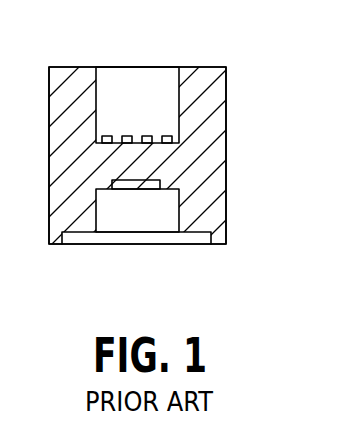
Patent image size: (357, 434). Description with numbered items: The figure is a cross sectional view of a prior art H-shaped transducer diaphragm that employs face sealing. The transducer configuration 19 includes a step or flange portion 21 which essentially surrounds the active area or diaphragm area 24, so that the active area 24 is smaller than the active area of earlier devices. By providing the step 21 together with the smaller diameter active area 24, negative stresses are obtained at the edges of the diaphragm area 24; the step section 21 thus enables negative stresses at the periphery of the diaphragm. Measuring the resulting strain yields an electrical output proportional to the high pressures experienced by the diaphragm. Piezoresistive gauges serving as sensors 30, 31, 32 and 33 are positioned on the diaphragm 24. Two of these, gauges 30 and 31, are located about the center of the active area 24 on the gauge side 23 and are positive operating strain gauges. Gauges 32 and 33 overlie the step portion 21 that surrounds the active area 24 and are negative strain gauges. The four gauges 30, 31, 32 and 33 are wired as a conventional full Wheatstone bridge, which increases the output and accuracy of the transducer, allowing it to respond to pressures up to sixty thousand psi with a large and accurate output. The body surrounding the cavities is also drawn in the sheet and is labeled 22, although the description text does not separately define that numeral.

The transducer configuration 19 is at (220, 212).
The step or flange portion 21 is at (112, 187).
The package body 22 is at (220, 130).
The gauge side 23 is at (148, 136).
The active area or diaphragm area 24 is at (150, 184).
The gauge 30 is at (166, 136).
The gauge 31 is at (127, 136).
The gauge 32 is at (108, 136).
The gauge 33 is at (179, 103).